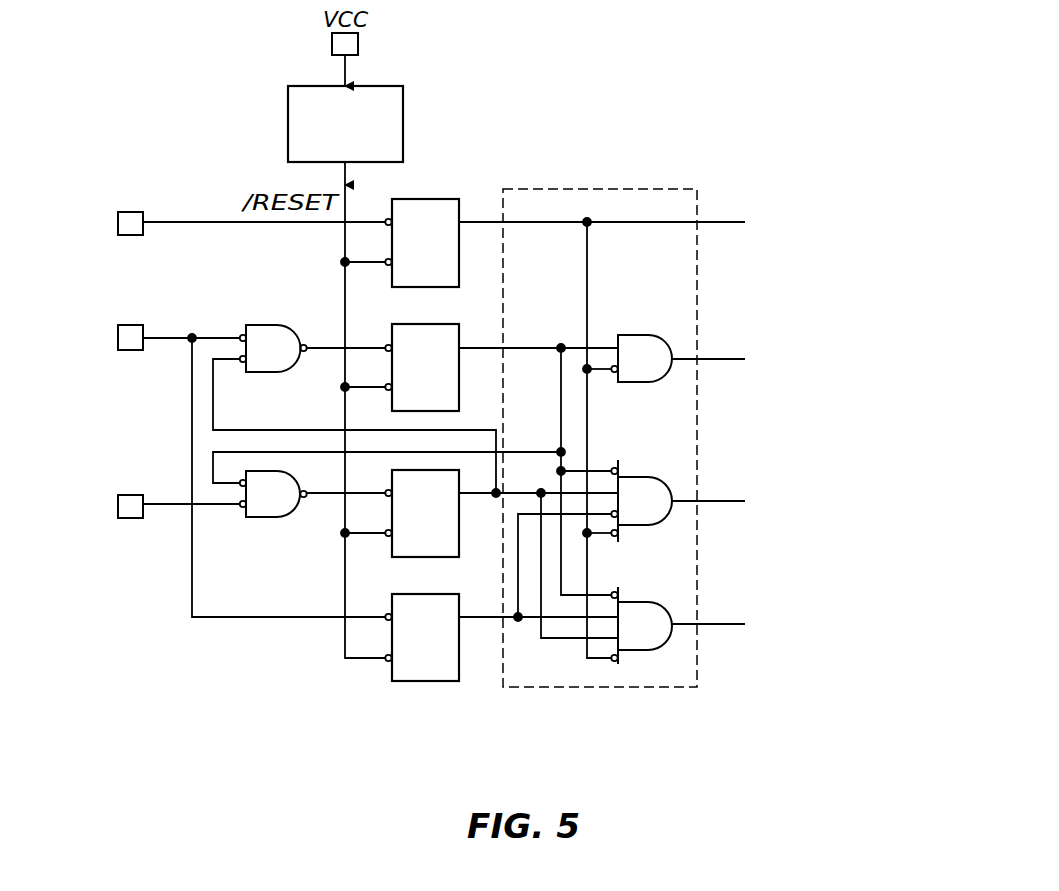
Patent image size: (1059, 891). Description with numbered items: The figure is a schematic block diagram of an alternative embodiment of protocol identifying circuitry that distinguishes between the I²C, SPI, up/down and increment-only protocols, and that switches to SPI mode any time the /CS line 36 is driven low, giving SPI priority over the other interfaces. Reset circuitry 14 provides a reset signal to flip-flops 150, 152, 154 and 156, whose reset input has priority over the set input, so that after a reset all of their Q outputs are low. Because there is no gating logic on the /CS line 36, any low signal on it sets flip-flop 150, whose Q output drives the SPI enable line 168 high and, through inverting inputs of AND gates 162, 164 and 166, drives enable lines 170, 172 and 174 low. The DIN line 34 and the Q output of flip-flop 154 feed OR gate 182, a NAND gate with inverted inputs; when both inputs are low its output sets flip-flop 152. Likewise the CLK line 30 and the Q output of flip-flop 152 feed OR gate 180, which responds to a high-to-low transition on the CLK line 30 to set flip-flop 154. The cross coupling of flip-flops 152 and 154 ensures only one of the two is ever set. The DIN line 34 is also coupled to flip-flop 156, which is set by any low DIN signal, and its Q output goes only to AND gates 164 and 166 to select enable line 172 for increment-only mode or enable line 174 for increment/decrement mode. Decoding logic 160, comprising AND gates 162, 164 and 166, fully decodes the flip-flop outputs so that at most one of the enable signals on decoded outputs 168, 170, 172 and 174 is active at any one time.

The reset circuitry 14 is at (403, 103).
The CLK line 30 is at (158, 518).
The DIN line 34 is at (157, 338).
The /CS line 36 is at (158, 222).
The flip-flop 150 is at (430, 199).
The flip-flop 152 is at (430, 324).
The flip-flop 154 is at (459, 528).
The flip-flop 156 is at (410, 681).
The decoding logic 160 is at (625, 189).
The AND gate 162 is at (623, 335).
The AND gate 164 is at (625, 477).
The AND gate 166 is at (625, 602).
The enable line 168 is at (720, 222).
The enable line 170 is at (724, 359).
The enable line 172 is at (720, 501).
The enable line 174 is at (720, 624).
The OR gate 180 is at (255, 517).
The OR gate 182 is at (262, 325).